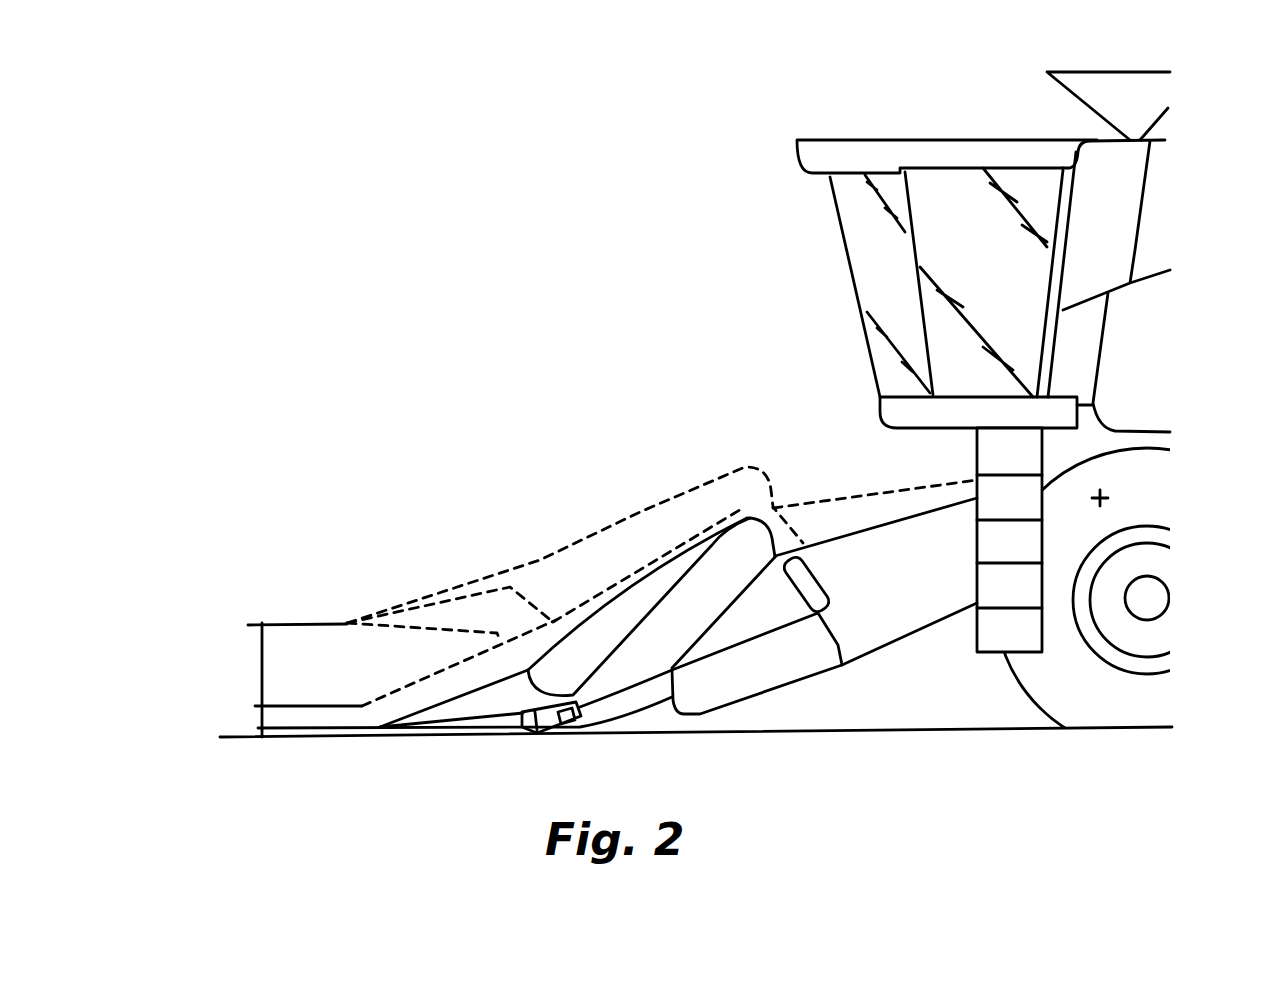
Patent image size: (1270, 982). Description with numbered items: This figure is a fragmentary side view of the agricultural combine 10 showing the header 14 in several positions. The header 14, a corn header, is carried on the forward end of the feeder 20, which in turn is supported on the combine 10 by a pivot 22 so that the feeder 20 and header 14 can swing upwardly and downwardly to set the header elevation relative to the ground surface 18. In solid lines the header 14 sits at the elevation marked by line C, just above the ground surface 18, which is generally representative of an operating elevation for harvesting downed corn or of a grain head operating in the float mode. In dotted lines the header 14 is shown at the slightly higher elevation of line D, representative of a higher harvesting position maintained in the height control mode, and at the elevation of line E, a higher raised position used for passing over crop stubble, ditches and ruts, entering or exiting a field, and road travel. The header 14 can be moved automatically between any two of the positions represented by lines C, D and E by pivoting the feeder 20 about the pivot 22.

The agricultural combine 10 is at (875, 118).
The header 14 is at (588, 608).
The ground surface 18 is at (915, 728).
The feeder 20 is at (850, 528).
The pivot 22 is at (1105, 497).
The line E is at (258, 623).
The line D is at (260, 706).
The line C is at (258, 732).